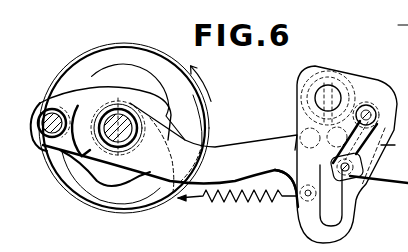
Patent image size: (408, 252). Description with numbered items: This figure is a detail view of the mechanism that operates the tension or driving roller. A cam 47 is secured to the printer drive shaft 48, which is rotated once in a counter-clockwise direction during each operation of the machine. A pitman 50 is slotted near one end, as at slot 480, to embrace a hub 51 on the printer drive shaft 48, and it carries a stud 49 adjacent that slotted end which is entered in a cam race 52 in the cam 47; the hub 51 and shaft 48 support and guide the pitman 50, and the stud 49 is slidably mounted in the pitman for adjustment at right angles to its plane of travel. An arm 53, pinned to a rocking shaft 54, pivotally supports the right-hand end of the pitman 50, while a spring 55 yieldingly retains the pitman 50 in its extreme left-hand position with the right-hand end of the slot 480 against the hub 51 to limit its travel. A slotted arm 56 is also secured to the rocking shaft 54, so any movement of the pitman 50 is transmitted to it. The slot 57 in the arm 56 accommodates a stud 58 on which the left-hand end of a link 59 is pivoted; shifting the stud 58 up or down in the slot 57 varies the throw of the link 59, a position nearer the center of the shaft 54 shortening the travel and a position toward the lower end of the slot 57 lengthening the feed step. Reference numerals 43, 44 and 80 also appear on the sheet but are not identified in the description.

The pin 43 is at (399, 13).
The pin 44 is at (372, 110).
The cam 47 is at (132, 208).
The printer drive shaft 48 is at (132, 135).
The stud 49 is at (40, 122).
The pitman 50 is at (252, 130).
The hub 51 is at (107, 110).
The cam race 52 is at (78, 192).
The arm 53 is at (292, 153).
The rocking shaft 54 is at (315, 97).
The spring 55 is at (243, 202).
The slotted arm 56 is at (343, 228).
The slot 57 is at (348, 208).
The stud 58 is at (341, 176).
The link 59 is at (378, 184).
The stop 80 is at (394, 146).
The slot 480 is at (56, 167).